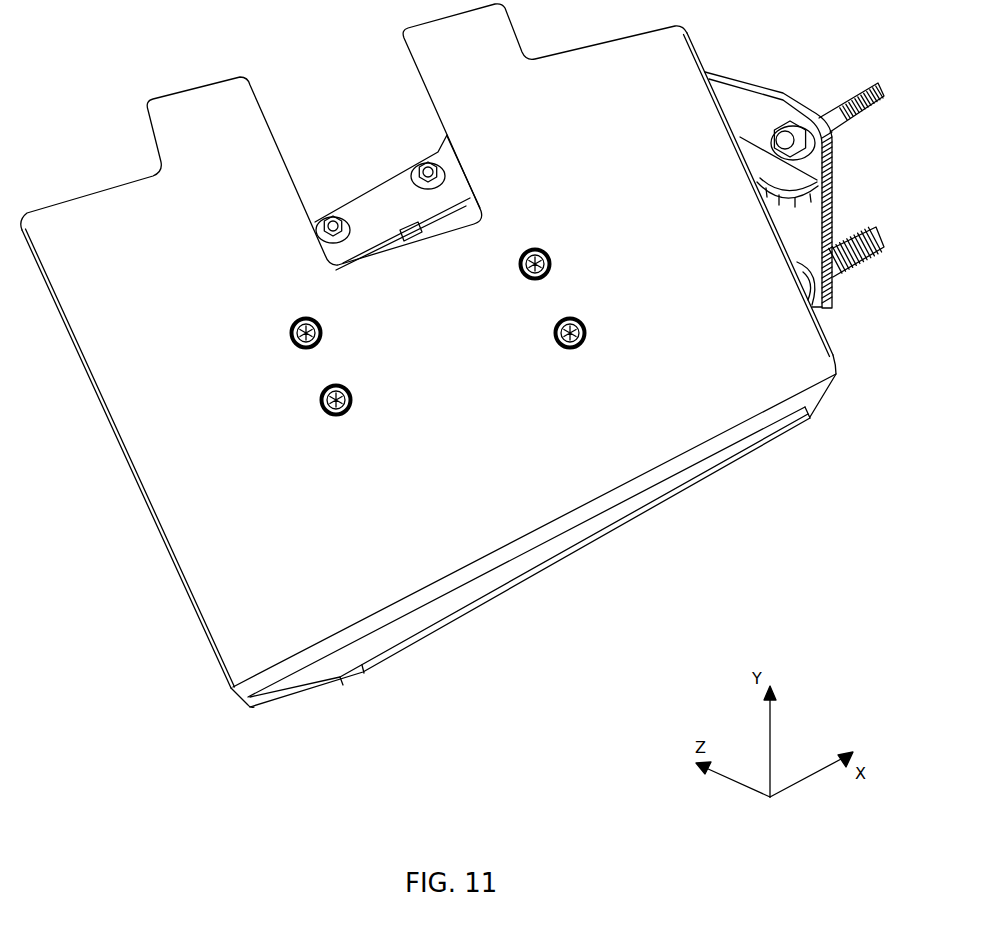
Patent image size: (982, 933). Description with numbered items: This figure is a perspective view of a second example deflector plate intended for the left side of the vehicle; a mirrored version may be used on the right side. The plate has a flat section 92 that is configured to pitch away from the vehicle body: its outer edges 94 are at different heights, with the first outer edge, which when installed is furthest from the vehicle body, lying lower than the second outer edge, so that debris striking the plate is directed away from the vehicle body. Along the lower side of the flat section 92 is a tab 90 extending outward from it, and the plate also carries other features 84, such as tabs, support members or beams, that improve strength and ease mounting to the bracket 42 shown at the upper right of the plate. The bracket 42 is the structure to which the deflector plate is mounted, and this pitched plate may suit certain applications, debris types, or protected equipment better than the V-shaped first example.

The bracket 42 is at (769, 126).
The other features 84 is at (438, 143).
The tabs 90 is at (470, 613).
The flat section 92 is at (513, 461).
The outer edges 94 is at (94, 600).